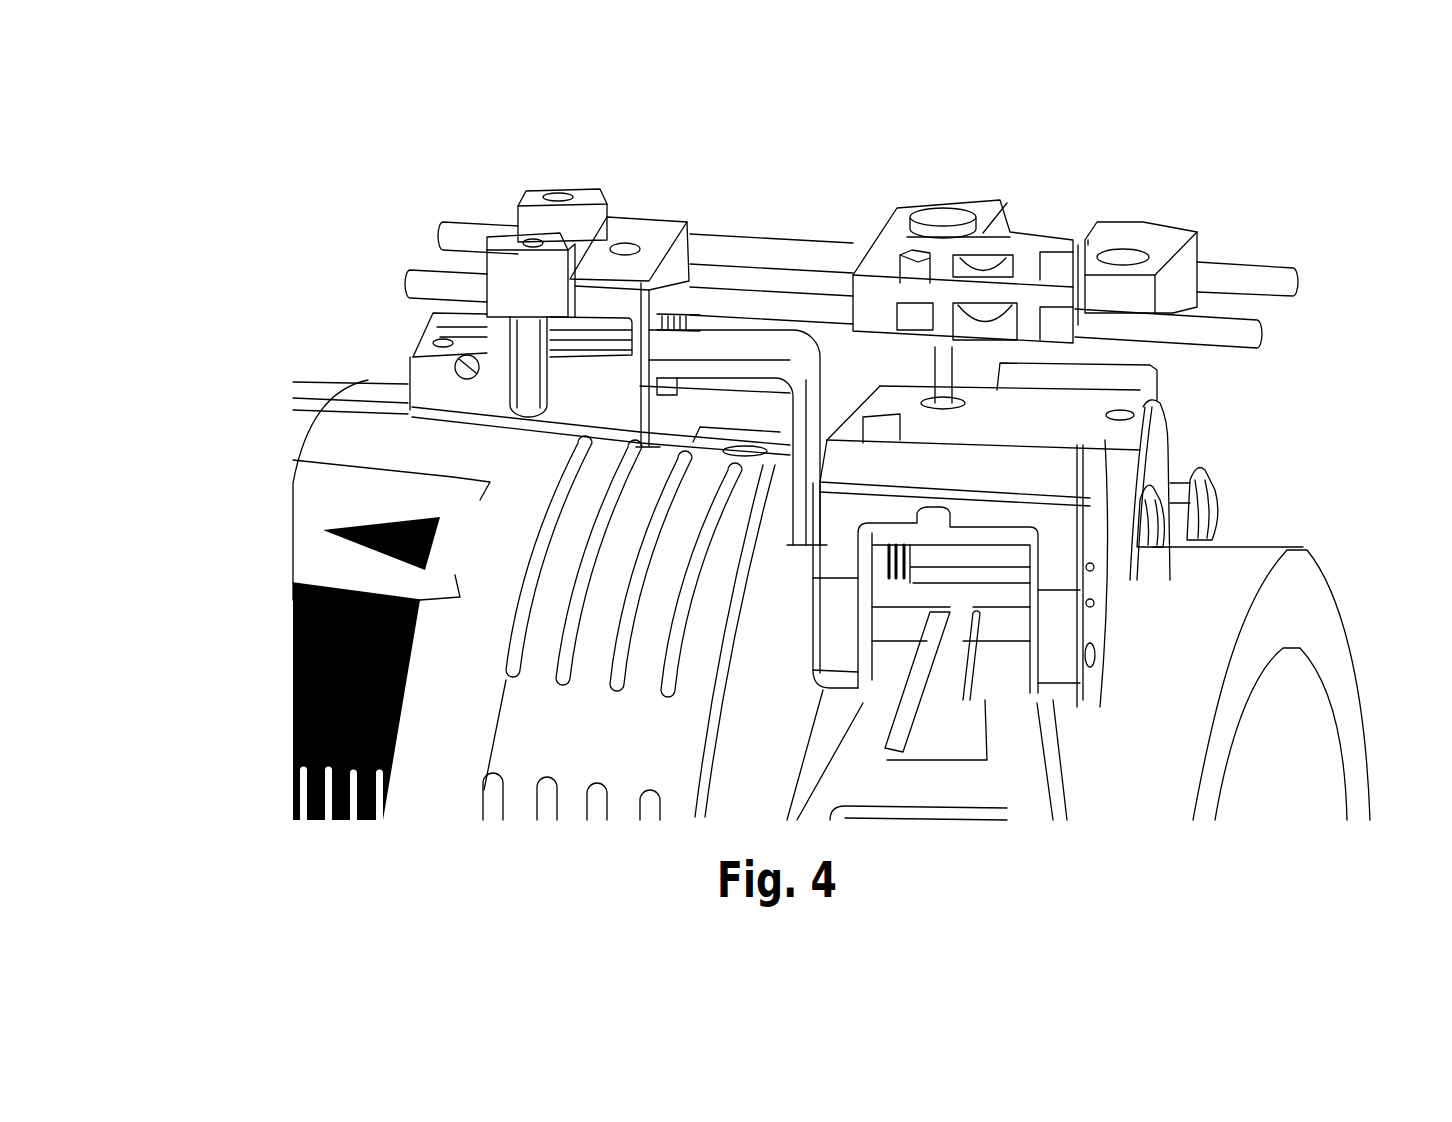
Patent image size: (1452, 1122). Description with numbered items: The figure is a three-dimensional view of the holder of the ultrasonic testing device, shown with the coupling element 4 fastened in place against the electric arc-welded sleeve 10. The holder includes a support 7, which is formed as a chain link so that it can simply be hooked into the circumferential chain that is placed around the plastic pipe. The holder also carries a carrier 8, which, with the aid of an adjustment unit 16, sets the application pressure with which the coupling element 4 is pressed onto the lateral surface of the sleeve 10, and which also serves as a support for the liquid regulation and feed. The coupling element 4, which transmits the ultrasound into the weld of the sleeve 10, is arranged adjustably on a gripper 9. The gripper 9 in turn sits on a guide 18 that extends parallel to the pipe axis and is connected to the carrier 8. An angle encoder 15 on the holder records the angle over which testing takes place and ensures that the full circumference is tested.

The coupling element 4 is at (397, 362).
The support 7 is at (1190, 429).
The carrier 8 is at (1186, 208).
The gripper 9 is at (679, 194).
The electric arc-welded sleeve 10 is at (288, 561).
The angle encoder 15 is at (1284, 498).
The adjustment unit 16 is at (977, 180).
The guide 18 is at (1272, 254).